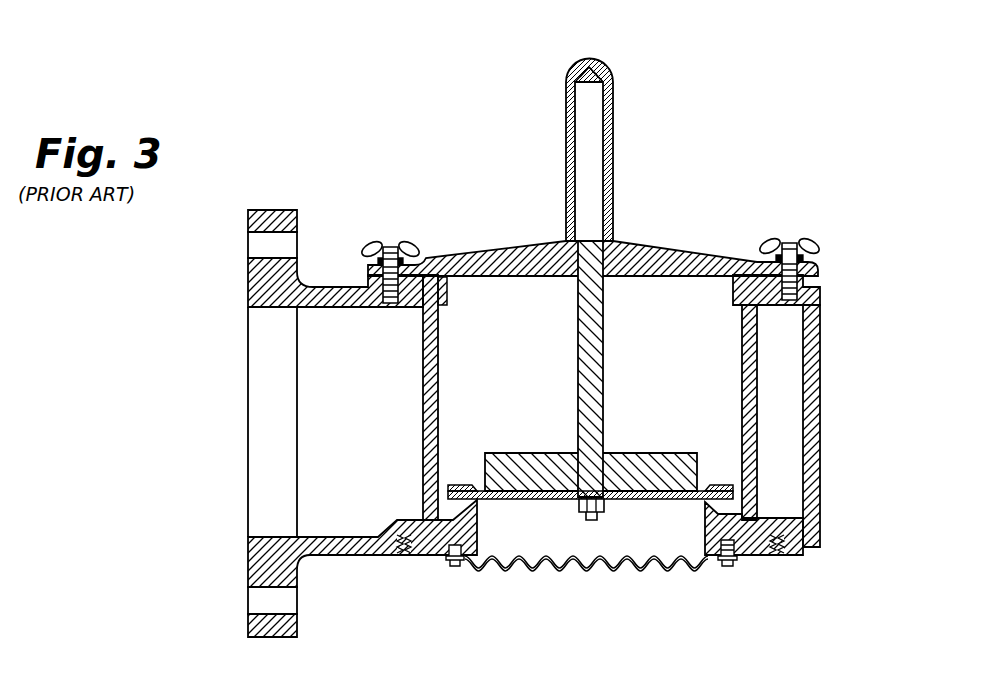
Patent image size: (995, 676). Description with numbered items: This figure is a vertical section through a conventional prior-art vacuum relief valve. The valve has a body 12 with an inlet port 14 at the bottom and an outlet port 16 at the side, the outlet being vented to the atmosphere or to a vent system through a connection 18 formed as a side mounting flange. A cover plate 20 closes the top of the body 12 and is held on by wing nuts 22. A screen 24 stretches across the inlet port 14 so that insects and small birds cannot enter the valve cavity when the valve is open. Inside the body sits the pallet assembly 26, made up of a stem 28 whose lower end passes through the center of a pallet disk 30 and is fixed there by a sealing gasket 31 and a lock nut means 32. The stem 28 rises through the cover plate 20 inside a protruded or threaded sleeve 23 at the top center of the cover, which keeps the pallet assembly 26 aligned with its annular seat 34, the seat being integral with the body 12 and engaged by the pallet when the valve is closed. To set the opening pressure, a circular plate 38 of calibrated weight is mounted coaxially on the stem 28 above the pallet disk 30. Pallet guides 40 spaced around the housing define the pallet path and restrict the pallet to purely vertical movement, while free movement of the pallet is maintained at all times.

The body 12 is at (821, 407).
The inlet port 14 is at (496, 586).
The outlet port 16 is at (324, 437).
The connection 18 is at (297, 211).
The cover plate 20 is at (665, 238).
The wing nuts 22 is at (816, 242).
The protruded or threaded sleeve 23 is at (613, 141).
The screen 24 is at (666, 571).
The pallet assembly 26 is at (633, 428).
The stem 28 is at (578, 394).
The pallet disk 30 is at (634, 503).
The sealing gasket 31 is at (571, 499).
The lock nut means 32 is at (583, 519).
The annular seat 34 is at (736, 524).
The circular plate 38 is at (548, 452).
The pallet guides 40 is at (439, 376).